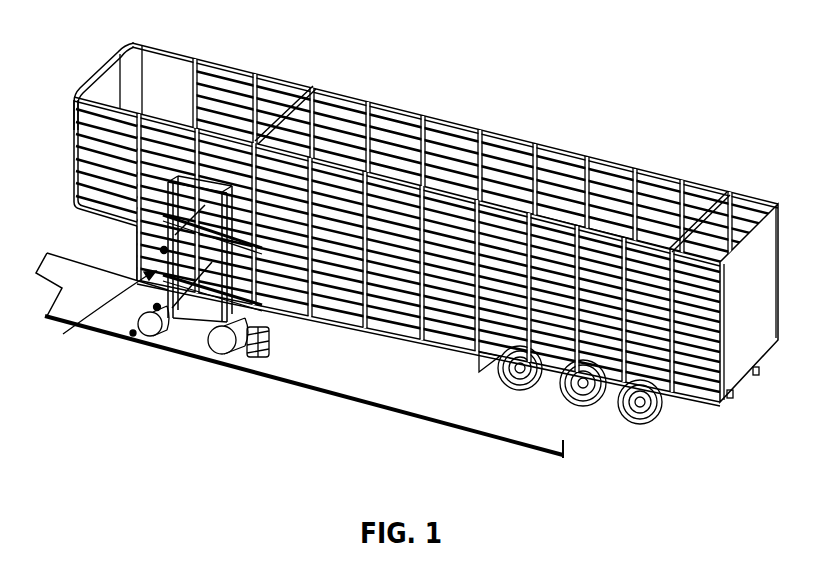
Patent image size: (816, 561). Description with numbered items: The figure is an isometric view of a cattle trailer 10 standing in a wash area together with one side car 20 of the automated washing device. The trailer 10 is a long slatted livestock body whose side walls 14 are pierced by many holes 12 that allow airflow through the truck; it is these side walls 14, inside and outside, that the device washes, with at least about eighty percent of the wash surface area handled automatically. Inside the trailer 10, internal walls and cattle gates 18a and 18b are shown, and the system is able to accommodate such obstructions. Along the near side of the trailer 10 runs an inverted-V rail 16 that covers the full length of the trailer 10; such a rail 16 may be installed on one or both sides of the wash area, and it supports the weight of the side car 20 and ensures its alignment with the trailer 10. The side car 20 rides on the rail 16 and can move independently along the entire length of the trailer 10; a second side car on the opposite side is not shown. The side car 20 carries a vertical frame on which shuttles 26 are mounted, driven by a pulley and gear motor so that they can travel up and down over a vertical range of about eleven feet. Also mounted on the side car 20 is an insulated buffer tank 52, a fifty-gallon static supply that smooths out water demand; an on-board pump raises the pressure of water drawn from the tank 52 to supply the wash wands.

The cattle trailer 10 is at (593, 127).
The holes 12 is at (390, 117).
The side walls 14 is at (507, 130).
The inverted-V rail 16 is at (293, 388).
The cattle gate 18a is at (673, 243).
The cattle gate 18b is at (298, 77).
The side car 20 is at (75, 326).
The shuttle 26 is at (164, 233).
The insulated buffer tank 52 is at (207, 360).